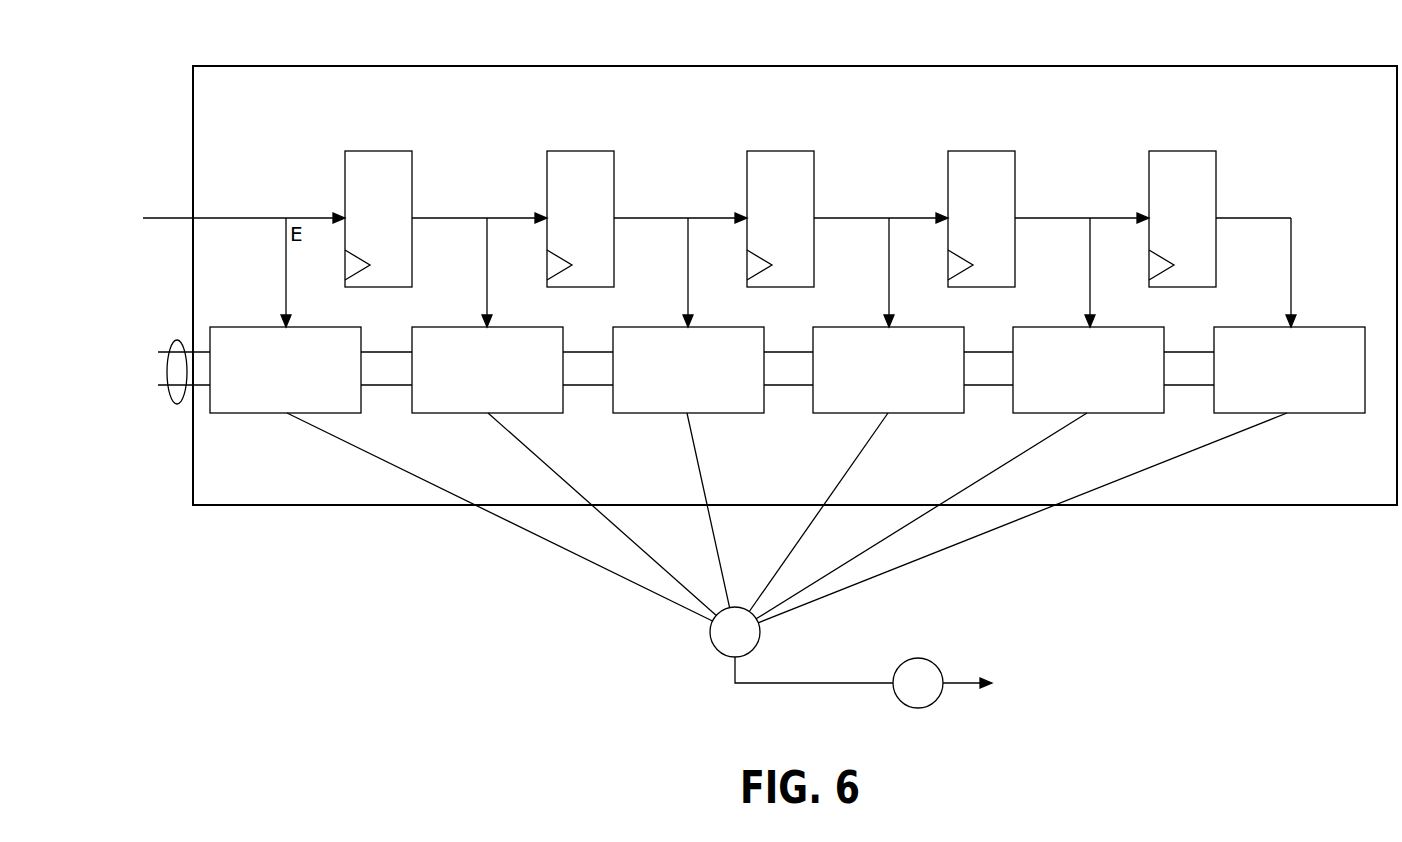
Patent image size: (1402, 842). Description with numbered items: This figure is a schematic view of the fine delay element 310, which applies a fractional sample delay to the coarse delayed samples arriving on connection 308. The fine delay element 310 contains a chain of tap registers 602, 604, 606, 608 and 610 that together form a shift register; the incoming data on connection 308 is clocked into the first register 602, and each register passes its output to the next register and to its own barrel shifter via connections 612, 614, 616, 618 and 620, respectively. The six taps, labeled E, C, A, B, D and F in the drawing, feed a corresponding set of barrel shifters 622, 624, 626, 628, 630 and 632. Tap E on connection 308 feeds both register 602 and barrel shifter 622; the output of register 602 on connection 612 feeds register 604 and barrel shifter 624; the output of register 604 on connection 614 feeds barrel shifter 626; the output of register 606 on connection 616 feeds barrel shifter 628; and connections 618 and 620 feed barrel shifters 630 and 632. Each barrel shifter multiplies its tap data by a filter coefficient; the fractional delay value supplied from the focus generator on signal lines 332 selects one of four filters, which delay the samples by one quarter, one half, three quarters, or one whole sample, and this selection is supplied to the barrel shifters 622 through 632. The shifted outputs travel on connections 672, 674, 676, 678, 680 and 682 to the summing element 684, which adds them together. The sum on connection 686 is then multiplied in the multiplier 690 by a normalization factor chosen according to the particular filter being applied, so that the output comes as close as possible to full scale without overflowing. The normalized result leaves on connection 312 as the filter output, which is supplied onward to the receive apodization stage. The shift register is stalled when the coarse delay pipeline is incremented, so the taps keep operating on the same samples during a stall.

The connection 308 is at (213, 218).
The fine delay element 310 is at (243, 122).
The connection 312 is at (958, 683).
The signal lines 332 is at (176, 404).
The register 602 is at (398, 177).
The register 604 is at (600, 177).
The register 606 is at (800, 177).
The register 608 is at (1001, 177).
The register 610 is at (1202, 177).
The connection 612 is at (428, 218).
The connection 614 is at (632, 218).
The connection 616 is at (832, 218).
The connection 618 is at (1030, 218).
The connection 620 is at (1242, 218).
The barrel shifter 622 is at (254, 409).
The barrel shifter 624 is at (456, 409).
The barrel shifter 626 is at (657, 409).
The barrel shifter 628 is at (857, 409).
The barrel shifter 630 is at (1057, 409).
The barrel shifter 632 is at (1258, 409).
The connection 672 is at (400, 476).
The connection 674 is at (556, 476).
The connection 676 is at (694, 453).
The connection 678 is at (859, 454).
The connection 680 is at (1020, 458).
The connection 682 is at (1170, 466).
The summing element 684 is at (718, 658).
The connection 686 is at (770, 683).
The multiplier 690 is at (908, 708).